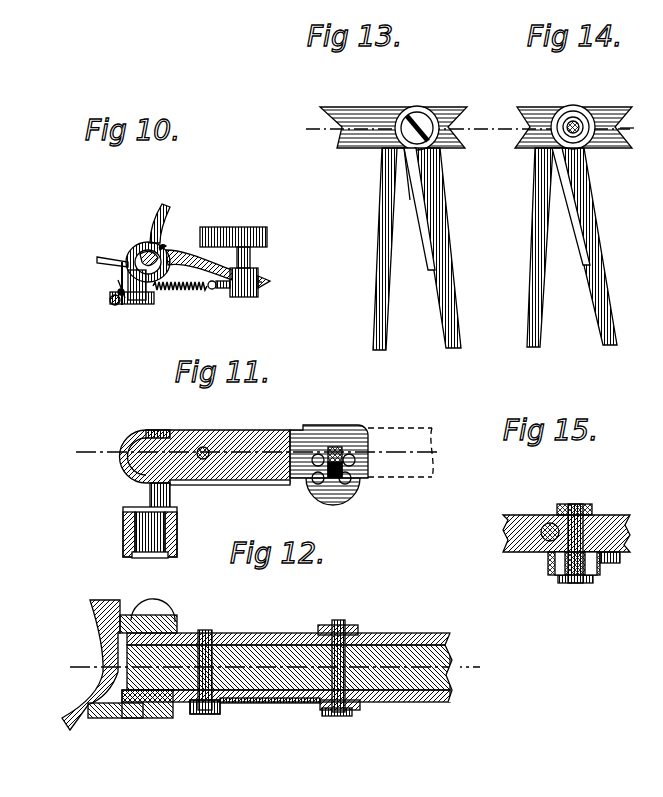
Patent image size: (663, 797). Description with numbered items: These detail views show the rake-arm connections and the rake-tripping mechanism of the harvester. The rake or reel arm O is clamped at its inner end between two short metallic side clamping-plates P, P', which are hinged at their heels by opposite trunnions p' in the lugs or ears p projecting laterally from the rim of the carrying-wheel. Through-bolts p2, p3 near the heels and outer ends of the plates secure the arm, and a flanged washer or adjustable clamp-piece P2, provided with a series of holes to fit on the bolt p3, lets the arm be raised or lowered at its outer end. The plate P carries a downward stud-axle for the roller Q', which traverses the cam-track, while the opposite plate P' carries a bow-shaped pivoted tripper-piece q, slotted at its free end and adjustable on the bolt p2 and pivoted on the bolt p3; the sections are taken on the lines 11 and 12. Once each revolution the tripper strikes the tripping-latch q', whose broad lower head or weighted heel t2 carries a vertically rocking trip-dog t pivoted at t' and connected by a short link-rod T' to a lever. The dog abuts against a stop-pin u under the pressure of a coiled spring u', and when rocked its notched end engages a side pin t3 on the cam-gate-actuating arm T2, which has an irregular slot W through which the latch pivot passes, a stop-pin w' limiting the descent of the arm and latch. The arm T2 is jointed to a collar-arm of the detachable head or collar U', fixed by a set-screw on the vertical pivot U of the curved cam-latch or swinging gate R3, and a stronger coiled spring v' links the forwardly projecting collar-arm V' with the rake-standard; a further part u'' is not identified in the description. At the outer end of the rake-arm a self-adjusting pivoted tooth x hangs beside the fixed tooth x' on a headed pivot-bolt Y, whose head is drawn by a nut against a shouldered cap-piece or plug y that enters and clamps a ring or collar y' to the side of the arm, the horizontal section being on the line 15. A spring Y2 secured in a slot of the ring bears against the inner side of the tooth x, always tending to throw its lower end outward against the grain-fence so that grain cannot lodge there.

In FIG. 10, the short link-rod T' is at (93, 258).
In FIG. 10, the pin or lug t3 is at (134, 252).
In FIG. 10, the irregular slot or transverse opening W is at (156, 252).
In FIG. 10, the tripping-latch q' is at (160, 215).
In FIG. 10, the stop-pin w' is at (151, 236).
In FIG. 10, the cam-gate-actuating arm T2 is at (190, 256).
In FIG. 10, the stronger coiled spring v' is at (180, 294).
In FIG. 10, the spring eye u'' is at (218, 296).
In FIG. 10, the head of tripping-latch t2 is at (123, 305).
In FIG. 10, the trip-arm or pivoted spring-dog t is at (106, 283).
In FIG. 10, the pivot t' is at (106, 292).
In FIG. 10, the stop-pin u is at (116, 314).
In FIG. 10, the coiled spring u' is at (132, 310).
In FIG. 10, the curved cam-latch or swinging gate R3 is at (240, 227).
In FIG. 10, the vertical pivot or axis U is at (263, 257).
In FIG. 10, the collar-arm V' is at (244, 296).
In FIG. 10, the adjustable collar or detachable head U' is at (270, 293).
In FIG. 13, the section line 15 is at (459, 130).
In FIG. 14, the section line 15 is at (636, 128).
In FIG. 13, the headed pivot-bolt Y is at (433, 111).
In FIG. 14, the headed pivot-bolt Y is at (588, 109).
In FIG. 15, the headed pivot-bolt Y is at (603, 513).
In FIG. 13, the shouldered cap-piece or plug y is at (413, 112).
In FIG. 15, the shouldered cap-piece or plug y is at (590, 549).
In FIG. 14, the ring or collar y' is at (567, 110).
In FIG. 15, the ring or collar y' is at (567, 577).
In FIG. 13, the self-adjusting pivoted tooth x is at (435, 248).
In FIG. 14, the self-adjusting pivoted tooth x is at (589, 246).
In FIG. 15, the self-adjusting pivoted tooth x is at (576, 533).
In FIG. 13, the fixed tooth x' is at (392, 249).
In FIG. 14, the fixed tooth x' is at (547, 247).
In FIG. 15, the fixed tooth x' is at (536, 517).
In FIG. 13, the spring Y2 is at (408, 178).
In FIG. 14, the spring Y2 is at (588, 176).
In FIG. 15, the spring Y2 is at (546, 557).
In FIG. 11, the section line 12 is at (260, 453).
In FIG. 11, the side plate or short arm P is at (205, 468).
In FIG. 12, the side plate or short arm P is at (291, 658).
In FIG. 11, the through-bolt p2 is at (206, 446).
In FIG. 11, the washer or adjustable clamp-piece P2 is at (358, 444).
In FIG. 12, the washer or adjustable clamp-piece P2 is at (213, 633).
In FIG. 11, the through-bolt p3 is at (336, 446).
In FIG. 12, the through-bolt p3 is at (347, 712).
In FIG. 11, the roller Q' is at (137, 520).
In FIG. 12, the roller Q' is at (153, 600).
In FIG. 12, the section line 11 is at (265, 663).
In FIG. 12, the rake-arm O is at (269, 665).
In FIG. 12, the lugs or ears p is at (132, 664).
In FIG. 12, the pivots or opposite trunnions p' is at (160, 674).
In FIG. 12, the tripper-piece or bow-shaped pivoted arm q is at (270, 718).
In FIG. 12, the side plate or short arm P' is at (222, 717).